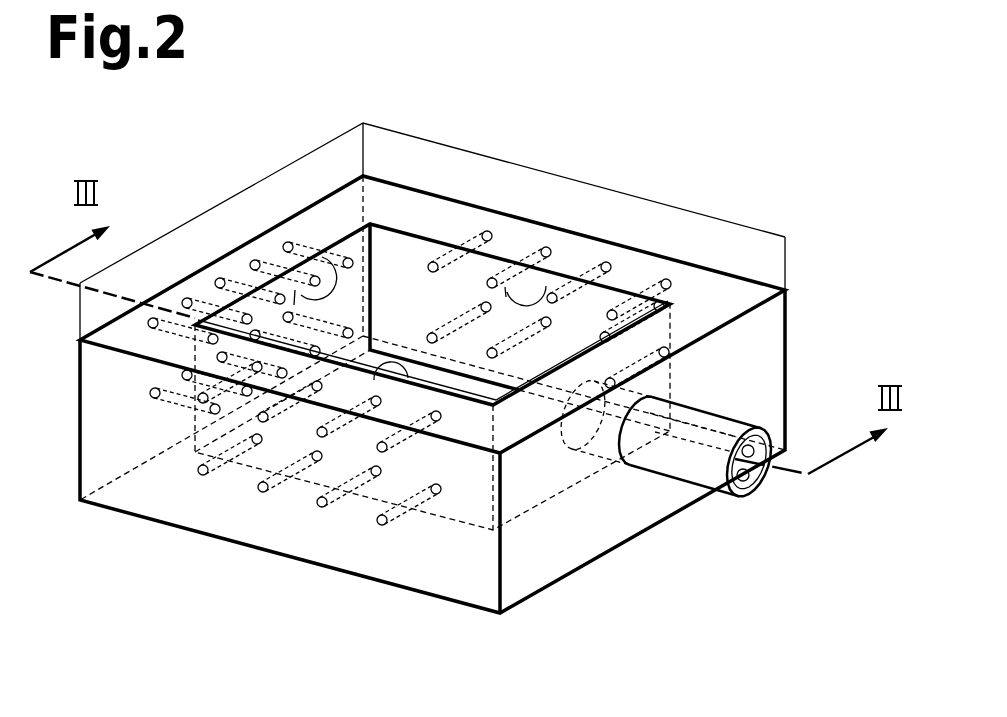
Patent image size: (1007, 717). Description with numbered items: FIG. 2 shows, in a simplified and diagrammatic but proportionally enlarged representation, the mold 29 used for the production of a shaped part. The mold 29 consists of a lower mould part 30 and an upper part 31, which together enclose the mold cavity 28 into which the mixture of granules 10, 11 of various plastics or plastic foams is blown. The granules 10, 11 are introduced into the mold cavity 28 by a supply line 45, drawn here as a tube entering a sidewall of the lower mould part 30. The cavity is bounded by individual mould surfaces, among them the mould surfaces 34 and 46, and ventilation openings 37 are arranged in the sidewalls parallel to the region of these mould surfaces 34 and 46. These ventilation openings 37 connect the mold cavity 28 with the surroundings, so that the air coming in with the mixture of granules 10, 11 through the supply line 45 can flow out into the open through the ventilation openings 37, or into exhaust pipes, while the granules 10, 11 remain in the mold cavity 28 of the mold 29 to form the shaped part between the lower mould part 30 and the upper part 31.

The granules 10 is at (772, 432).
The granules 11 is at (759, 487).
The mold cavity 28 is at (412, 276).
The mold 29 is at (703, 121).
The lower mould part 30 is at (540, 546).
The upper part 31 is at (399, 147).
The mould surface 34 is at (322, 257).
The ventilation openings 37 is at (200, 475).
The supply line 45 is at (692, 456).
The mould surface 46 is at (547, 287).